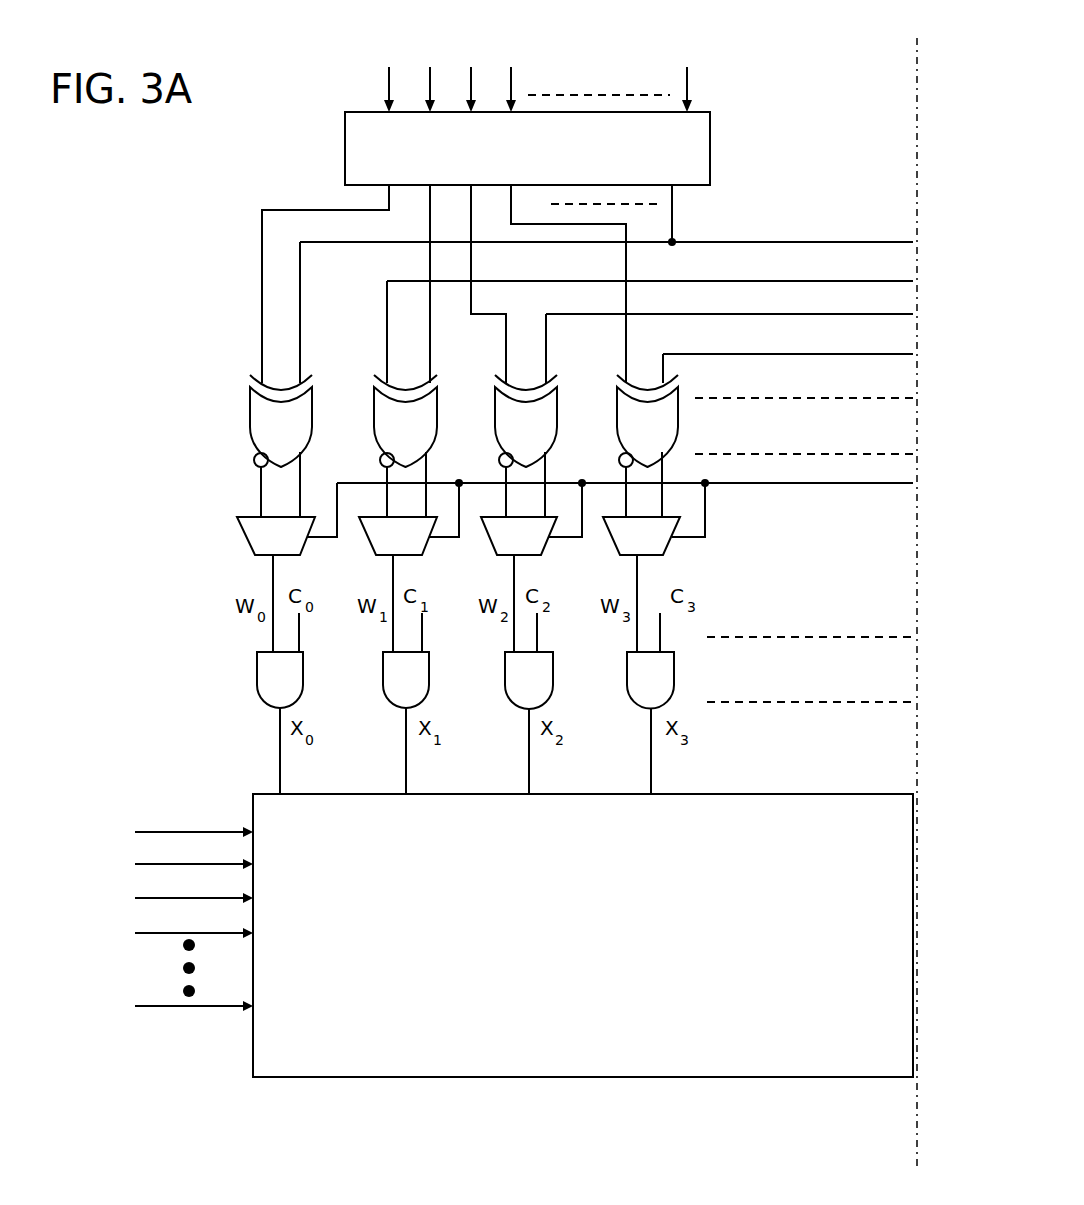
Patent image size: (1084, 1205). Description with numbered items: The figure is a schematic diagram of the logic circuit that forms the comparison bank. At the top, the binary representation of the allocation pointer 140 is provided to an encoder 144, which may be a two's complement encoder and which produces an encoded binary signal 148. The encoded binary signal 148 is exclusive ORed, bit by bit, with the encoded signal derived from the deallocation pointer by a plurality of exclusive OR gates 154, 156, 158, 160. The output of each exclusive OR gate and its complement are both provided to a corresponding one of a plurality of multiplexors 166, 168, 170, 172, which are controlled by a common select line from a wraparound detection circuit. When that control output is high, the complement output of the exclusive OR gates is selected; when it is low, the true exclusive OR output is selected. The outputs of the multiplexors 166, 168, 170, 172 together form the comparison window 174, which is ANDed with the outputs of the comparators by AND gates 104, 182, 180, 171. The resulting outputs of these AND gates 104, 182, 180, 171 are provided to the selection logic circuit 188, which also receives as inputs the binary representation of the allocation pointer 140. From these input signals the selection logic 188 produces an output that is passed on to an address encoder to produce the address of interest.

The allocation pointer 140 is at (363, 58).
The encoder 144 is at (345, 124).
The encoded binary signal 148 is at (389, 195).
The exclusive OR gate 154 is at (678, 418).
The exclusive OR gate 156 is at (556, 418).
The exclusive OR gate 158 is at (433, 380).
The exclusive OR gate 160 is at (306, 380).
The multiplexor 166 is at (665, 545).
The multiplexor 168 is at (545, 545).
The multiplexor 170 is at (428, 540).
The multiplexor 172 is at (300, 548).
The comparison window 174 is at (210, 600).
The AND gate 104 is at (304, 690).
The AND gate 182 is at (430, 690).
The AND gate 180 is at (555, 690).
The AND gate 171 is at (675, 690).
The selection logic circuit 188 is at (620, 1077).